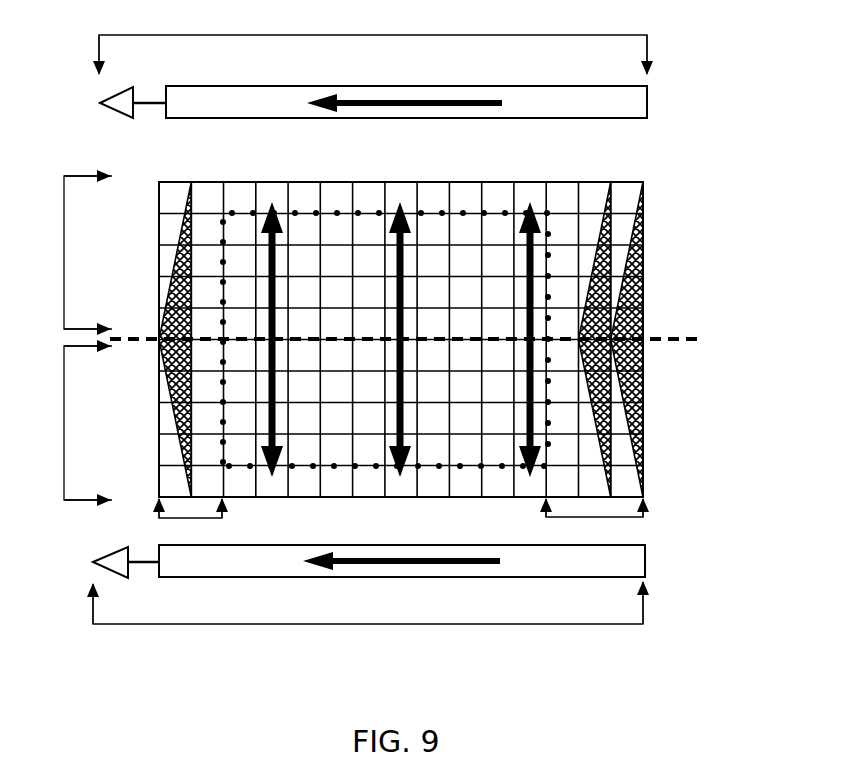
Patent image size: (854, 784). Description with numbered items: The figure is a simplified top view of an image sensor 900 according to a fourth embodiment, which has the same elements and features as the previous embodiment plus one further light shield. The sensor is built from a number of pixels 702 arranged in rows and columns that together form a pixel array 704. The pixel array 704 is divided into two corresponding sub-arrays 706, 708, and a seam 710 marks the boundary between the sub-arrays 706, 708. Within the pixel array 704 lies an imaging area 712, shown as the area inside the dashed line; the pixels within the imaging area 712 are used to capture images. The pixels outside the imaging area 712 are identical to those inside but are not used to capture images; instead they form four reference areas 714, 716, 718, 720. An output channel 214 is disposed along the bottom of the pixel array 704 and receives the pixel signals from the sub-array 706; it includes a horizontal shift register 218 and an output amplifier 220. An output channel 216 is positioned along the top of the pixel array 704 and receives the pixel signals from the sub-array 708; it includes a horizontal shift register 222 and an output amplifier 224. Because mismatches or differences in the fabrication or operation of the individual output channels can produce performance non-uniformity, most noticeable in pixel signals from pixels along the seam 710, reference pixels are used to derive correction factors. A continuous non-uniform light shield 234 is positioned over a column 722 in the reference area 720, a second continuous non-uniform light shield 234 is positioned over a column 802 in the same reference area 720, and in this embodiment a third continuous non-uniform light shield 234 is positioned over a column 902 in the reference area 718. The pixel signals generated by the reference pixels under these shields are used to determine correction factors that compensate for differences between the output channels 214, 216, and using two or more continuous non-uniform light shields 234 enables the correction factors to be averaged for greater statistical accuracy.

The image sensor 900 is at (723, 154).
The output channel 216 is at (373, 43).
The output channel 214 is at (368, 615).
The horizontal shift register 222 is at (548, 96).
The horizontal shift register 218 is at (606, 558).
The output amplifier 224 is at (138, 91).
The output amplifier 220 is at (130, 568).
The column 902 is at (182, 180).
The column 802 is at (586, 180).
The column 722 is at (630, 180).
The continuous non-uniform light shield 234 is at (170, 307).
The pixels 702 is at (467, 502).
The pixel array 704 is at (158, 418).
The sub-array 706 is at (66, 423).
The sub-array 708 is at (66, 252).
The seam 710 is at (429, 339).
The imaging area 712 is at (552, 439).
The reference area 714 is at (156, 200).
The reference area 716 is at (156, 488).
The reference area 718 is at (190, 521).
The reference area 720 is at (594, 520).